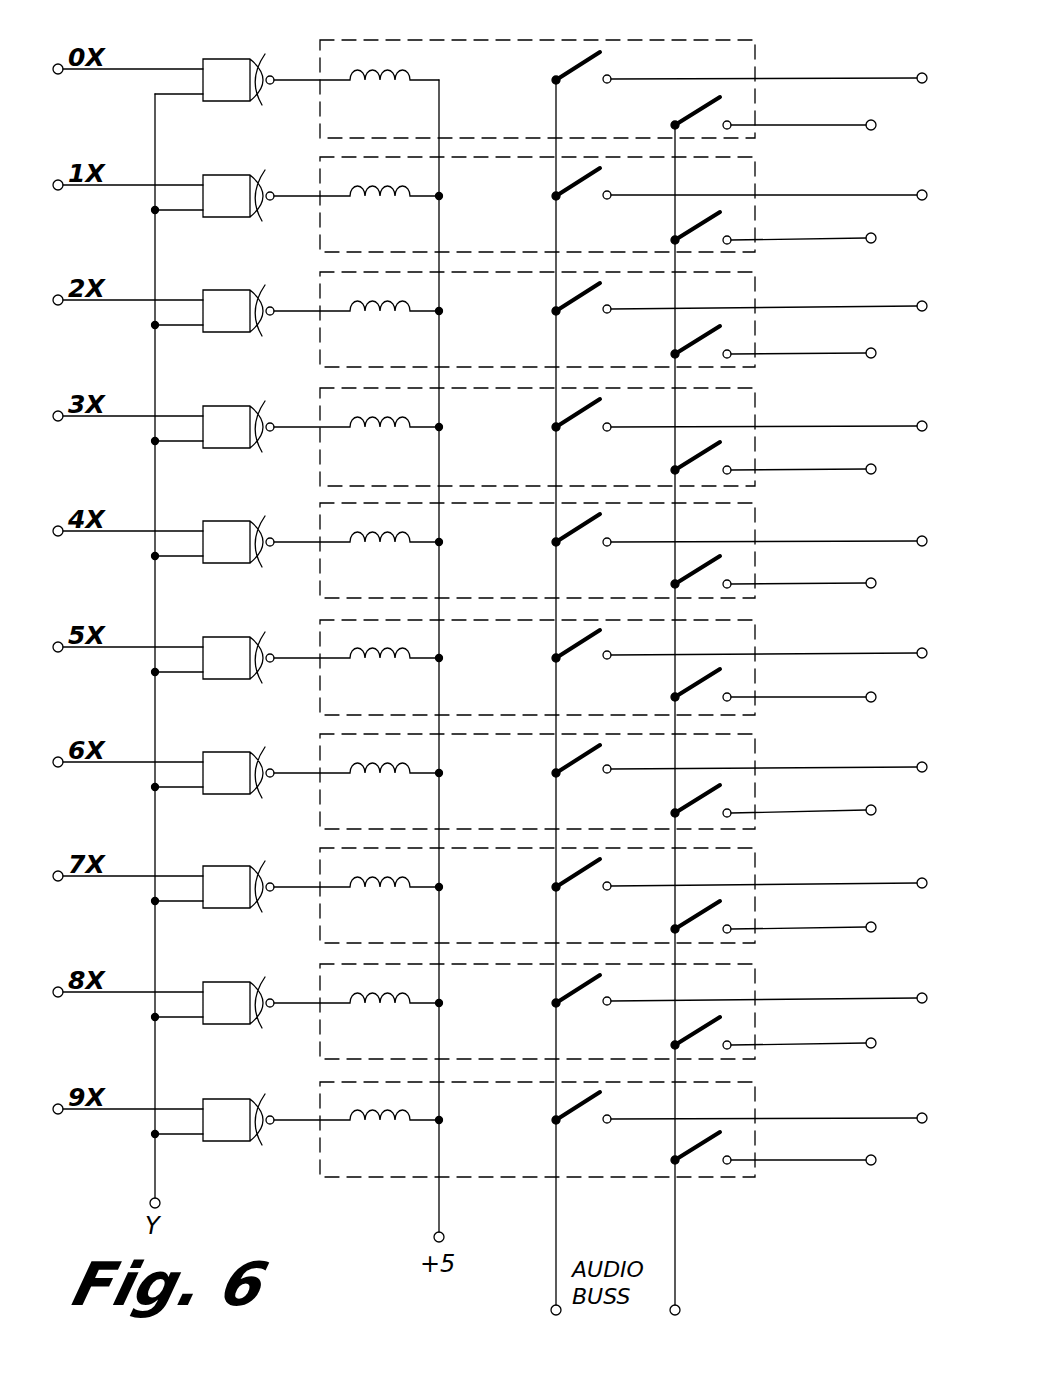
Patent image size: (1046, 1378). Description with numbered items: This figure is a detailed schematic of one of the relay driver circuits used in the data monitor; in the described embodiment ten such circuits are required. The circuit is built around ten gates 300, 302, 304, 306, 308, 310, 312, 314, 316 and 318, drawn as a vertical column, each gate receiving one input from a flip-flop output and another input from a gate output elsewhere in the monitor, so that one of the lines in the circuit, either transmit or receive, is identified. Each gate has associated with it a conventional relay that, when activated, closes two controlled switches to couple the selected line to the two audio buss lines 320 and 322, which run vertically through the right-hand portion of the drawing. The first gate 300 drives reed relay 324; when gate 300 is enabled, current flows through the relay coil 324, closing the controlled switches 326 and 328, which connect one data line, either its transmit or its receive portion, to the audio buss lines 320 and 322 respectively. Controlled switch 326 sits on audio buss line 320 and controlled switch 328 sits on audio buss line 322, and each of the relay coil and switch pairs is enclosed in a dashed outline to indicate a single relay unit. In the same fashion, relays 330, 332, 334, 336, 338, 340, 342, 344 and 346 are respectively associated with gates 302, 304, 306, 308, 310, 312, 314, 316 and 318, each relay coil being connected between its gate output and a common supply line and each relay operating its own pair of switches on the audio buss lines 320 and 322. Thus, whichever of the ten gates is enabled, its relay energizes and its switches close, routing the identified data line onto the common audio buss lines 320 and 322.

The gate 300 is at (232, 73).
The gate 302 is at (232, 189).
The gate 304 is at (232, 304).
The gate 306 is at (232, 420).
The gate 308 is at (232, 535).
The gate 310 is at (232, 651).
The gate 312 is at (232, 766).
The gate 314 is at (232, 880).
The gate 316 is at (232, 996).
The gate 318 is at (232, 1113).
The audio buss line 320 is at (556, 1219).
The audio buss line 322 is at (675, 1238).
The reed relay coil 324 is at (377, 88).
The controlled switch 326 is at (584, 53).
The controlled switch 328 is at (700, 107).
The relay 330 is at (377, 204).
The relay 332 is at (377, 319).
The relay 334 is at (377, 435).
The relay 336 is at (377, 550).
The relay 338 is at (377, 666).
The relay 340 is at (377, 781).
The relay 342 is at (377, 895).
The relay 344 is at (377, 1011).
The relay 346 is at (377, 1128).